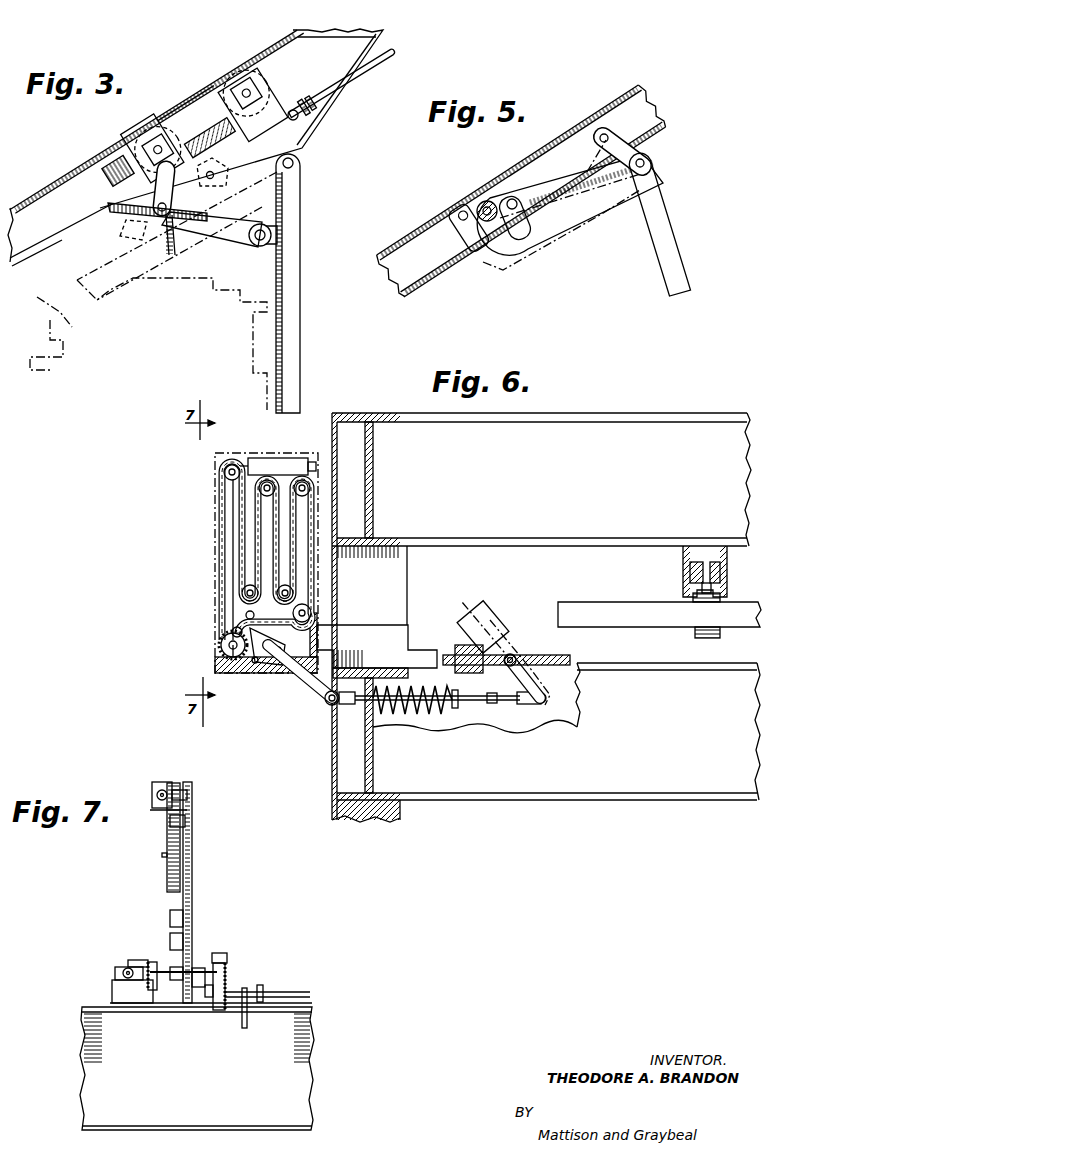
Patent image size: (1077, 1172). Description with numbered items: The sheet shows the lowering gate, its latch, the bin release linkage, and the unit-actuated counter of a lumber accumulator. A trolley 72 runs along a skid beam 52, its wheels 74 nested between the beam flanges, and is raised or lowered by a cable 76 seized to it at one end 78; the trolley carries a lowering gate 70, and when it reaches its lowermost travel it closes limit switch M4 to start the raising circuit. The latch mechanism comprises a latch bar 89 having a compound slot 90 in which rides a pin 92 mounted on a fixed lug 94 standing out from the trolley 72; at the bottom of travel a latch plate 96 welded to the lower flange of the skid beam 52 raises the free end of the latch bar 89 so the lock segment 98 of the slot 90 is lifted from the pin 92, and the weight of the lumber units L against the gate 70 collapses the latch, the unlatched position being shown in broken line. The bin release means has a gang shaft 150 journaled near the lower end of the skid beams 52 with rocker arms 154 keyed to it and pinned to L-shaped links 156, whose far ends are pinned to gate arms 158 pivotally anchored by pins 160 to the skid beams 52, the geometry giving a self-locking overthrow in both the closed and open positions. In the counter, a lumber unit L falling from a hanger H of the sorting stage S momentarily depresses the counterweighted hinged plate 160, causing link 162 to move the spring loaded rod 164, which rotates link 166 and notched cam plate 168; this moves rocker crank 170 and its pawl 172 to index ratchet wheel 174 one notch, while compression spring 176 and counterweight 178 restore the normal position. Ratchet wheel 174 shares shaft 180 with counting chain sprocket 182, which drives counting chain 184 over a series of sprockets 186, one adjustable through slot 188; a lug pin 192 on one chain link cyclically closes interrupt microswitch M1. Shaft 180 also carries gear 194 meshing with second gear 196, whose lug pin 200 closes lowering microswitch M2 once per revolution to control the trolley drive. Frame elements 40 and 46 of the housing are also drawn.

In FIG. 3, the skid beam 52 is at (55, 190).
In FIG. 5, the skid beam 52 is at (420, 224).
In FIG. 3, the trolley 72 is at (173, 113).
In FIG. 3, the wheels 74 is at (138, 130).
In FIG. 3, the cable 76 is at (347, 83).
In FIG. 3, the cable end 78 is at (300, 114).
In FIG. 3, the limit switch M4 is at (106, 178).
In FIG. 3, the fixed lug 94 is at (176, 181).
In FIG. 3, the compound slot 90 is at (196, 233).
In FIG. 3, the latch bar 89 is at (232, 238).
In FIG. 3, the pin 92 is at (174, 244).
In FIG. 3, the latch plate 96 is at (94, 222).
In FIG. 3, the lock segment 98 is at (118, 230).
In FIG. 3, the lowering gate 70 is at (290, 283).
In FIG. 5, the gang shaft 150 is at (478, 205).
In FIG. 5, the rocker arm 154 is at (510, 196).
In FIG. 5, the L-shaped link 156 is at (590, 205).
In FIG. 5, the gate arm 158 is at (663, 224).
In FIG. 5, the pin / counterweighted hinged plate 160 is at (615, 140).
In FIG. 6, the pin / counterweighted hinged plate 160 is at (540, 655).
In FIG. 7, the pin / counterweighted hinged plate 160 is at (300, 992).
In FIG. 6, the frame 40 is at (332, 808).
In FIG. 6, the housing 46 is at (622, 788).
In FIG. 6, the sorting stage S is at (663, 569).
In FIG. 6, the lumber unit L is at (558, 608).
In FIG. 6, the hanger H is at (697, 632).
In FIG. 6, the counting chain 184 is at (222, 492).
In FIG. 6, the sprocket 186 is at (240, 470).
In FIG. 7, the sprocket 186 is at (180, 785).
In FIG. 6, the interrupt microswitch M1 is at (290, 458).
In FIG. 7, the interrupt microswitch M1 is at (155, 782).
In FIG. 6, the slot 188 is at (320, 570).
In FIG. 6, the ratchet wheel 174 is at (222, 642).
In FIG. 7, the ratchet wheel 174 is at (226, 968).
In FIG. 6, the pawl 172 is at (232, 628).
In FIG. 7, the pawl 172 is at (226, 953).
In FIG. 6, the shaft 180 is at (240, 662).
In FIG. 6, the rocker crank 170 is at (262, 668).
In FIG. 6, the notched cam plate 168 is at (295, 632).
In FIG. 7, the notched cam plate 168 is at (218, 1010).
In FIG. 6, the link 166 is at (333, 660).
In FIG. 7, the link 166 is at (247, 1015).
In FIG. 6, the compression spring 176 is at (430, 715).
In FIG. 6, the spring loaded rod 164 is at (522, 704).
In FIG. 6, the link 162 is at (530, 678).
In FIG. 6, the counterweight 178 is at (458, 652).
In FIG. 7, the lug pin 192 is at (162, 855).
In FIG. 7, the counting chain sprocket 182 is at (170, 955).
In FIG. 7, the lowering microswitch M2 is at (115, 972).
In FIG. 7, the lug pin 200 is at (132, 960).
In FIG. 7, the second gear 196 is at (154, 990).
In FIG. 7, the gear 194 is at (182, 990).